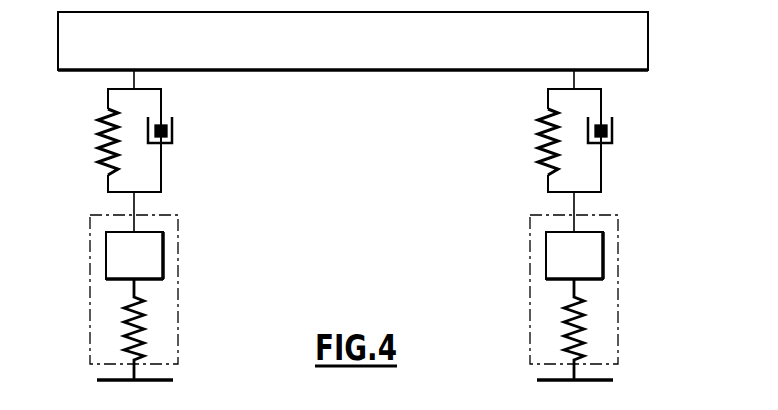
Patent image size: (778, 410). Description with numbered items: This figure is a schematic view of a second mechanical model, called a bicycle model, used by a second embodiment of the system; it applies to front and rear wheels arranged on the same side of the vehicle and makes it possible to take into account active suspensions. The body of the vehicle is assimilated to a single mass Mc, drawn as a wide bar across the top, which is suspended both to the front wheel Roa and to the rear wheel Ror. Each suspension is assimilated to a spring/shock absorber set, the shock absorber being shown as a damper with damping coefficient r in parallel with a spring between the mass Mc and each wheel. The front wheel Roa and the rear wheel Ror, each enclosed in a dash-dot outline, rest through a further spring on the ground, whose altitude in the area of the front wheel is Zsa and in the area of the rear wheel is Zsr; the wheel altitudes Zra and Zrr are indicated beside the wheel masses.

The mass Mc is at (353, 41).
The damping coefficient r is at (362, 140).
The front wheel Roa is at (90, 272).
The front wheel vertical displacement Zra is at (166, 254).
The altitude of the ground in the area of the front wheel Zsa is at (176, 380).
The rear wheel Ror is at (530, 272).
The rear wheel vertical displacement Zrr is at (606, 254).
The altitude of the ground in the area of the rear wheel Zsr is at (616, 380).